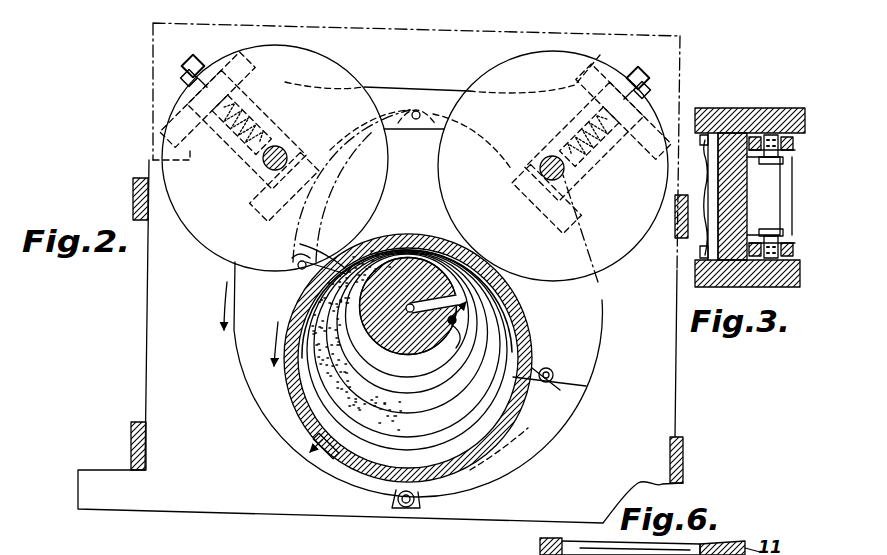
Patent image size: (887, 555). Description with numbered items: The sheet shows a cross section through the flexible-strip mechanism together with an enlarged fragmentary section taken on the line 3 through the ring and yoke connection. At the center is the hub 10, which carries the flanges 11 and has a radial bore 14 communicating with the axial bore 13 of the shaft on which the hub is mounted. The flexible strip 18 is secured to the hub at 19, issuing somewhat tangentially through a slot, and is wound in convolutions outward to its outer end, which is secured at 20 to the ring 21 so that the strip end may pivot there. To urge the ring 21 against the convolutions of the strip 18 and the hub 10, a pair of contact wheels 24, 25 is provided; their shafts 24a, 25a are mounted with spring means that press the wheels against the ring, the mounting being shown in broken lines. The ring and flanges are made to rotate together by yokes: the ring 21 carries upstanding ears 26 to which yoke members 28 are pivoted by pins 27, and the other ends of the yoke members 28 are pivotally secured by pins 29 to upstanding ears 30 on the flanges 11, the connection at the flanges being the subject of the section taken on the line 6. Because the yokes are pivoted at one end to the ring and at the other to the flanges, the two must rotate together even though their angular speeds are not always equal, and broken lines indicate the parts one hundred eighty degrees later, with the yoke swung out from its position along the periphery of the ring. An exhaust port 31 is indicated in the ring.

In FIG. 2, the hub 10 is at (380, 360).
In FIG. 2, the flanges 11 is at (588, 303).
In FIG. 3, the flanges 11 is at (728, 287).
In FIG. 2, the axial bore 13 is at (410, 304).
In FIG. 2, the radial bore 14 is at (440, 316).
In FIG. 2, the flexible strip 18 is at (372, 428).
In FIG. 2, the strip securing point at hub 19 is at (456, 330).
In FIG. 2, the strip securing point at ring 20 is at (352, 258).
In FIG. 2, the ring 21 is at (297, 303).
In FIG. 3, the ring 21 is at (745, 198).
In FIG. 2, the contact wheel 24 is at (484, 78).
In FIG. 2, the shaft of contact wheel 24a is at (548, 160).
In FIG. 2, the contact wheel 25 is at (348, 68).
In FIG. 2, the shaft of contact wheel 25a is at (282, 148).
In FIG. 2, the upstanding ears 26 is at (546, 368).
In FIG. 3, the upstanding ears 26 is at (793, 225).
In FIG. 2, the pins 27 is at (556, 382).
In FIG. 3, the pins 27 is at (770, 236).
In FIG. 2, the yoke members 28 is at (522, 462).
In FIG. 3, the yoke members 28 is at (803, 287).
In FIG. 2, the pins 29 is at (415, 500).
In FIG. 2, the upstanding ears 30 is at (396, 494).
In FIG. 2, the exhaust port 31 is at (330, 444).
In FIG. 2, the section line 3— 3 is at (513, 372).
In FIG. 2, the section line 6— 6 is at (405, 536).